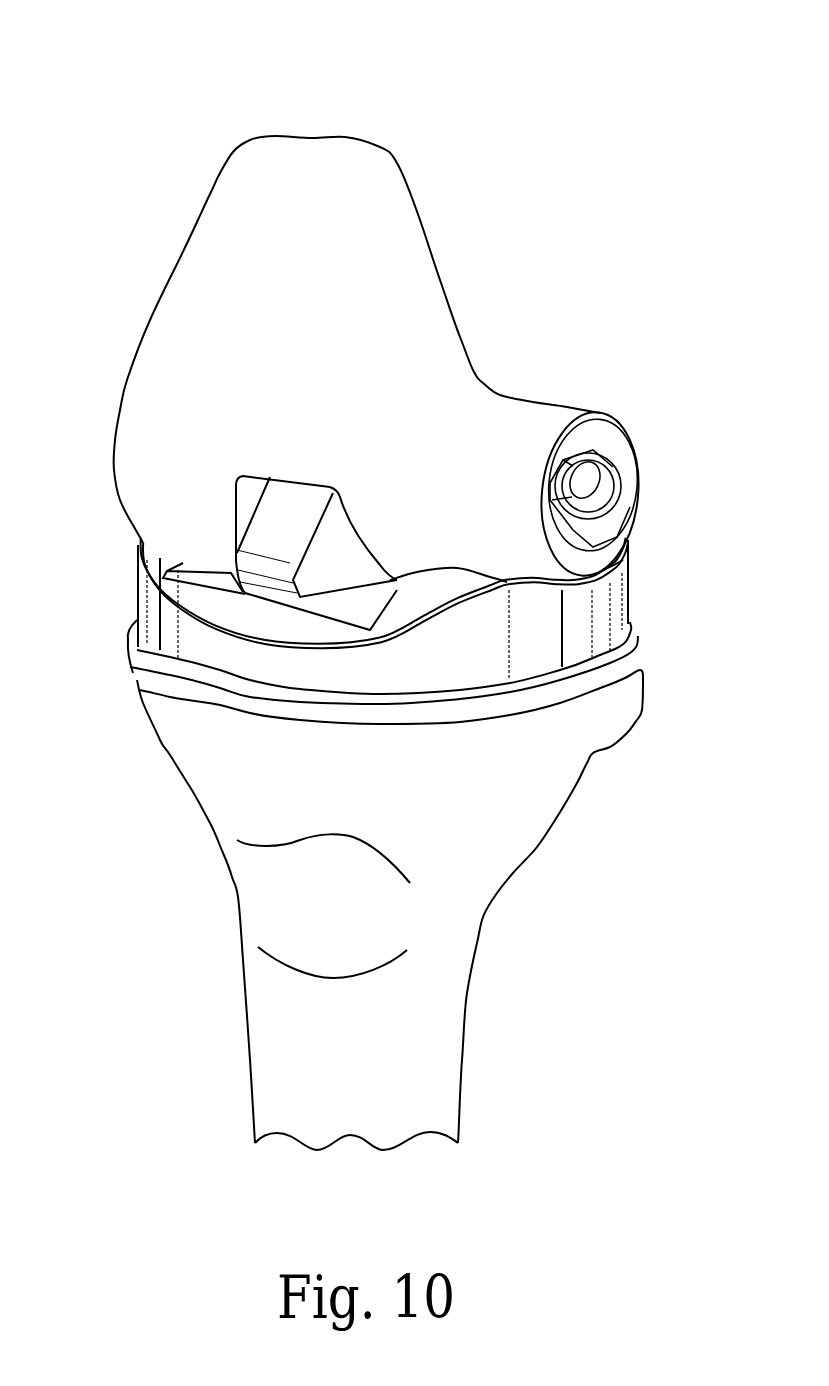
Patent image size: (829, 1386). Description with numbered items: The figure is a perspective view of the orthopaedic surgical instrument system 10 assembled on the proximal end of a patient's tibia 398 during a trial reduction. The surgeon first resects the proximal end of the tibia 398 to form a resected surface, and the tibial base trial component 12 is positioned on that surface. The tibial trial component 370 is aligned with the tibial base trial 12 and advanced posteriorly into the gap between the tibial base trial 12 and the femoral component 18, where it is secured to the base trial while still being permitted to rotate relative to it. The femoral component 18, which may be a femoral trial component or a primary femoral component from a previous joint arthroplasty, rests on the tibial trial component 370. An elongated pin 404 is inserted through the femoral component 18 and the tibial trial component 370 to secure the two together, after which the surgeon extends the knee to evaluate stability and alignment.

The orthopaedic surgical instrument system 10 is at (668, 89).
The femoral component 18 is at (507, 414).
The elongated pin 404 is at (636, 480).
The tibial trial component 370 is at (607, 608).
The tibial base trial component 12 is at (597, 678).
The patient's tibia 398 is at (457, 970).